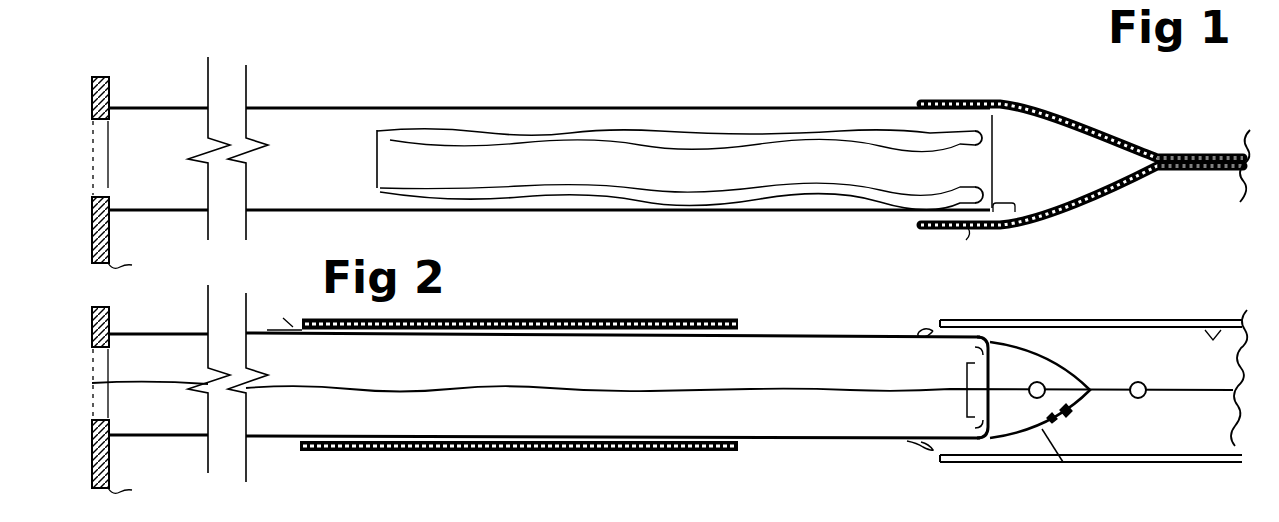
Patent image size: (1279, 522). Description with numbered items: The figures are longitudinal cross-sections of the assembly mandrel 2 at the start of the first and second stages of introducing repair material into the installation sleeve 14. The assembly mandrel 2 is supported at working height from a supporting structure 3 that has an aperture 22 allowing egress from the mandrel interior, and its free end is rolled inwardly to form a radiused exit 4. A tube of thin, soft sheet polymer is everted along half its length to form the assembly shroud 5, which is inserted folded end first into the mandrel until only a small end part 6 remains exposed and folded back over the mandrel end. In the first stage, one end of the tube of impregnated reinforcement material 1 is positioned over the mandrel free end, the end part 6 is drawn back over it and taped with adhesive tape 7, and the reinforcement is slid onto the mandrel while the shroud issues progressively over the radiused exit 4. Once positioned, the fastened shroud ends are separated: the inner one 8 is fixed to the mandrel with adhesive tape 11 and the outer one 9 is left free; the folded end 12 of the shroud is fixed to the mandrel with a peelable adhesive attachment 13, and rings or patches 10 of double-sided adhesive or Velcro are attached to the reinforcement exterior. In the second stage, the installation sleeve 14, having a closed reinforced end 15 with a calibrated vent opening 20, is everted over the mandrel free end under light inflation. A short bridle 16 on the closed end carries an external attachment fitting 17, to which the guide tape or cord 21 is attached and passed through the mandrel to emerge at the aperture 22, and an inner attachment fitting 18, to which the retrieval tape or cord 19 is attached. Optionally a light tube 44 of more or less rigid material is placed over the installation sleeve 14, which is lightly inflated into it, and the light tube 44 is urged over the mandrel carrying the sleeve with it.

In FIG. 1, the impregnated reinforcement material 1 is at (1123, 190).
In FIG. 2, the impregnated reinforcement material 1 is at (608, 327).
In FIG. 1, the assembly mandrel 2 is at (377, 107).
In FIG. 2, the assembly mandrel 2 is at (787, 438).
In FIG. 1, the supporting structure 3 is at (112, 88).
In FIG. 2, the supporting structure 3 is at (112, 322).
In FIG. 1, the radiused exit 4 is at (1022, 223).
In FIG. 2, the radiused exit 4 is at (1000, 348).
In FIG. 1, the assembly shroud 5 is at (645, 133).
In FIG. 2, the assembly shroud 5 is at (803, 335).
In FIG. 1, the end part of assembly shroud 6 is at (923, 227).
In FIG. 1, the adhesive tape 7 is at (960, 100).
In FIG. 2, the inner end of assembly shroud 8 is at (267, 437).
In FIG. 2, the outer end of assembly shroud 9 is at (288, 440).
In FIG. 2, the double-sided adhesive ring 10 is at (318, 448).
In FIG. 2, the adhesive tape 11 is at (283, 438).
In FIG. 2, the folded end of assembly shroud 12 is at (925, 332).
In FIG. 2, the peelable adhesive attachment 13 is at (897, 443).
In FIG. 2, the installation sleeve 14 is at (1213, 338).
In FIG. 2, the closed reinforced end 15 is at (1063, 462).
In FIG. 2, the bridle 16 is at (1113, 393).
In FIG. 2, the external attachment fitting 17 is at (1033, 397).
In FIG. 2, the inner attachment fitting 18 is at (1142, 397).
In FIG. 2, the retrieval tape or cord 19 is at (1210, 390).
In FIG. 2, the calibrated vent opening 20 is at (1057, 418).
In FIG. 2, the guide tape or cord 21 is at (545, 390).
In FIG. 1, the aperture 22 is at (100, 173).
In FIG. 2, the aperture 22 is at (100, 398).
In FIG. 2, the light tube 44 is at (1120, 318).